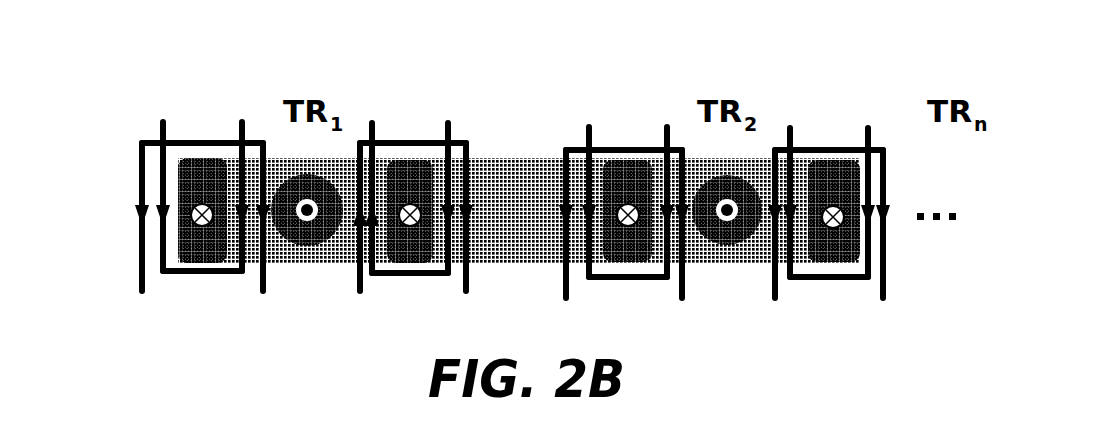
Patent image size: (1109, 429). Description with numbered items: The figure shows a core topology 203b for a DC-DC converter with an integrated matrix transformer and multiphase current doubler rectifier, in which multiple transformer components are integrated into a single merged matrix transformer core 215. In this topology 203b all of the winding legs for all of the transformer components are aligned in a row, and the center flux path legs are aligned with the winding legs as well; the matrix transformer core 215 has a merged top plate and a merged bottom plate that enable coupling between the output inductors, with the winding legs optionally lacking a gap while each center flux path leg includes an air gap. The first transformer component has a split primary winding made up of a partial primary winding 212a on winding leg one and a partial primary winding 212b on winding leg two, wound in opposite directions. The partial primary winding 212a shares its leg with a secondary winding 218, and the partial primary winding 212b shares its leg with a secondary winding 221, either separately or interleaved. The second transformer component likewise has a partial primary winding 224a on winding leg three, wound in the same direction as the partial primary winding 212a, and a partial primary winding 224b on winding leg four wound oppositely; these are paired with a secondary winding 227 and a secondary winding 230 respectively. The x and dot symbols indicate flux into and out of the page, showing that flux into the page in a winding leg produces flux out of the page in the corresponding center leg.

The core topology 203b is at (156, 61).
The matrix transformer core 215 is at (526, 221).
The secondary winding 218 is at (157, 110).
The secondary winding 221 is at (375, 112).
The secondary winding 227 is at (592, 112).
The secondary winding 230 is at (795, 112).
The partial primary winding 212a is at (139, 306).
The partial primary winding 212b is at (367, 306).
The partial primary winding 224a is at (573, 306).
The partial primary winding 224b is at (875, 306).